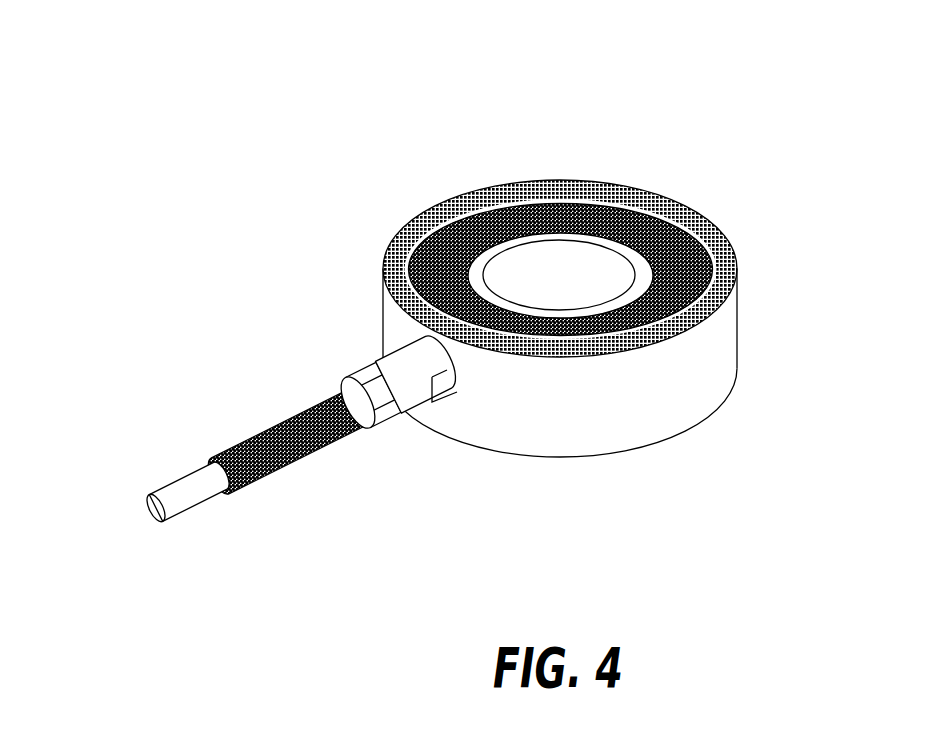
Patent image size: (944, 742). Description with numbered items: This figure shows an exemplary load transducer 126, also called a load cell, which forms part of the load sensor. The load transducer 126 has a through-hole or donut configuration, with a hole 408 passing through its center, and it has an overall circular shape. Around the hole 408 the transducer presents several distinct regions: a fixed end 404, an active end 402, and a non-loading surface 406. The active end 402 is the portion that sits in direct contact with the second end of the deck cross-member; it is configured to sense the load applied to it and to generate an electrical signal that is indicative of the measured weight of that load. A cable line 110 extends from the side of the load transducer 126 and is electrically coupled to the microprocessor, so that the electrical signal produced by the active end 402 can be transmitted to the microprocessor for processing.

The load transducer 126 is at (144, 146).
The cable line 110 is at (188, 497).
The active end 402 is at (470, 265).
The fixed end 404 is at (395, 250).
The non-loading surface 406 is at (620, 215).
The hole 408 is at (553, 266).